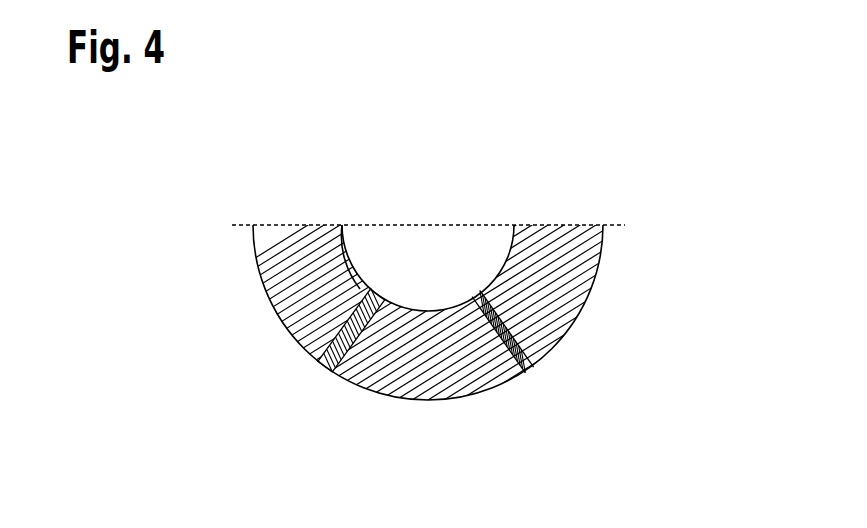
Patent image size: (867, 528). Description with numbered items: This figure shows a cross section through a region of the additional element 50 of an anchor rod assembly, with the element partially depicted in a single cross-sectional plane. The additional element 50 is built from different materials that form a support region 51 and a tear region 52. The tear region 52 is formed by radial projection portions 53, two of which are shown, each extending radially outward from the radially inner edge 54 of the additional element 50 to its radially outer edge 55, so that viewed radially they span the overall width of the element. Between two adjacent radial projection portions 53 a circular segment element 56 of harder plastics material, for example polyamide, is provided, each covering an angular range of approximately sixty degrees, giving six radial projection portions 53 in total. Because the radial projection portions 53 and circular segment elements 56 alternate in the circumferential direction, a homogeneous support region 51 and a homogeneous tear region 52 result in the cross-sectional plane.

The additional element 50 is at (428, 279).
The support region 51 is at (351, 250).
The tear region 52 is at (478, 293).
The radial projection portion 53 is at (327, 363).
The radially inner edge 54 is at (397, 307).
The radially outer edge 55 is at (388, 399).
The circular segment element 56 is at (443, 366).